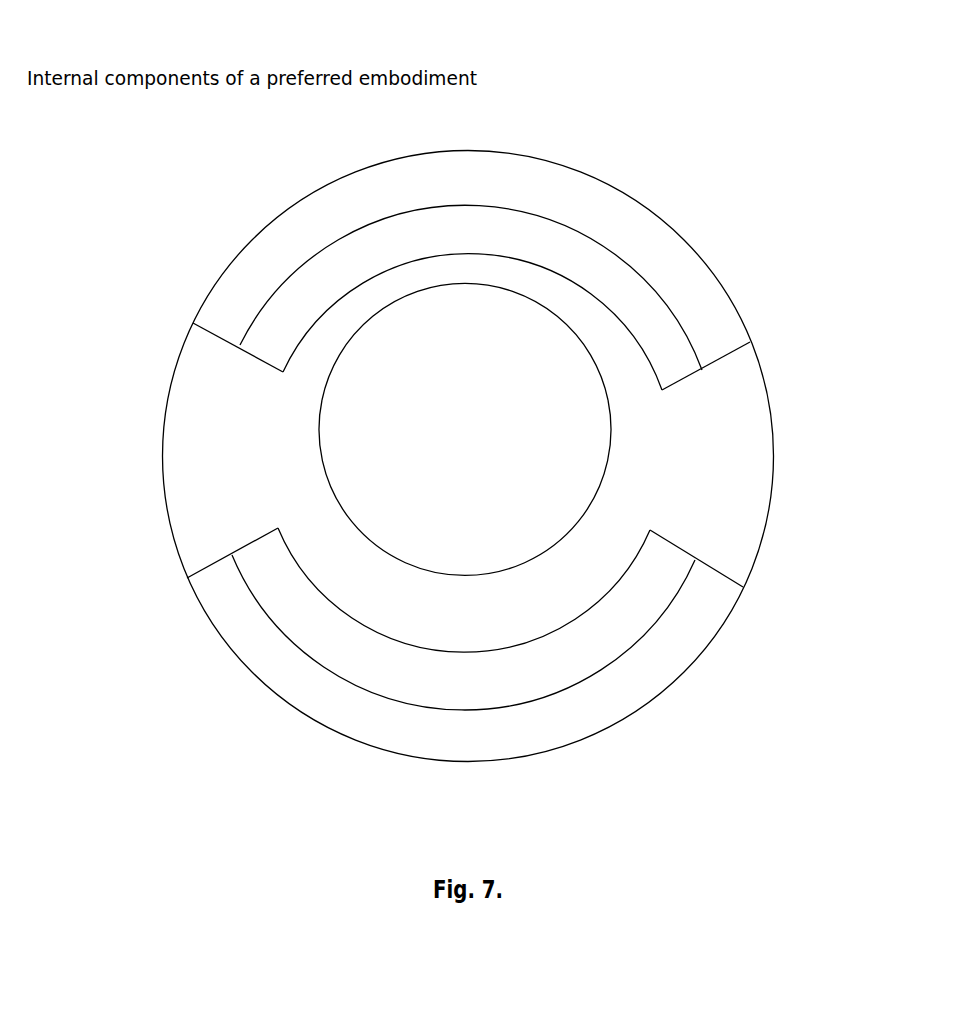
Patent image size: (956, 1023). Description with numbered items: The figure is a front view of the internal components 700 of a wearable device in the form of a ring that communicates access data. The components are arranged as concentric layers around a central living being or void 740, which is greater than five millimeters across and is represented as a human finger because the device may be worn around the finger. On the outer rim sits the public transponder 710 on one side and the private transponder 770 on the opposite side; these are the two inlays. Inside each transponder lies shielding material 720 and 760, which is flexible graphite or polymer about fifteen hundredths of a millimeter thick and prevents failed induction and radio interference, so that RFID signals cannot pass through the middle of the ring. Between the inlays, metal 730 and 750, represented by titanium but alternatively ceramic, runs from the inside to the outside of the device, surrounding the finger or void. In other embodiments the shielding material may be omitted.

The internal components 700 is at (150, 432).
The public transponder 710 is at (583, 199).
The shielding material 720 is at (578, 253).
The metal 730 is at (520, 288).
The living being or void 740 is at (553, 452).
The metal 750 is at (510, 618).
The shielding material 760 is at (532, 673).
The private transponder 770 is at (590, 715).